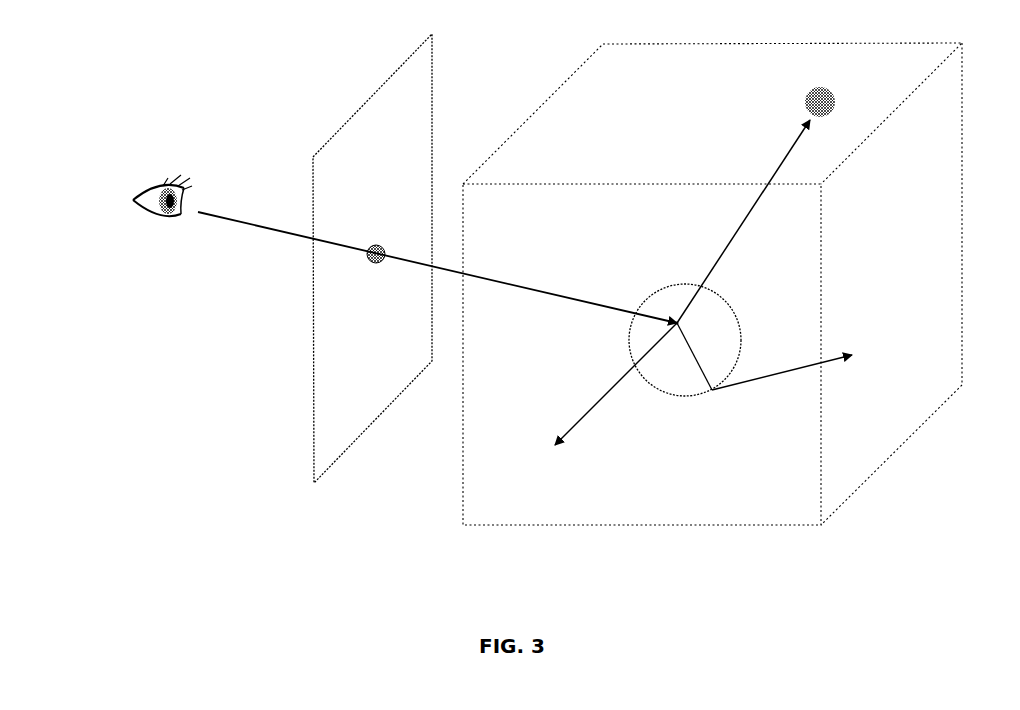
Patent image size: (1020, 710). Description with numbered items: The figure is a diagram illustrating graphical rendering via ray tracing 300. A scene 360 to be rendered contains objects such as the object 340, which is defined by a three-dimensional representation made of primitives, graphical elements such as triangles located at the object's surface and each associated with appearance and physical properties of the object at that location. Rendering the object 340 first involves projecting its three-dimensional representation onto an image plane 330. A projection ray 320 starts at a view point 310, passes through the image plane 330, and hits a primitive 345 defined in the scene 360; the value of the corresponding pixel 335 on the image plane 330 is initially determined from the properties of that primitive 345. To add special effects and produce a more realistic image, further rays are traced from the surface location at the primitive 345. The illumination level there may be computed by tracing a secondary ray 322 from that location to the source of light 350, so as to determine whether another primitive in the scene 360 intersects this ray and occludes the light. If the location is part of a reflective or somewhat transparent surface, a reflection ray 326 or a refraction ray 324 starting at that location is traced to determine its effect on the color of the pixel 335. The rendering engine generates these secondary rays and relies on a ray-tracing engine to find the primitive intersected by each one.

The graphical rendering via ray tracing 300 is at (511, 670).
The view point 310 is at (117, 195).
The projection ray 320 is at (437, 267).
The secondary ray 322 is at (743, 221).
The refraction ray 324 is at (782, 367).
The reflection ray 326 is at (610, 384).
The image plane 330 is at (343, 258).
The pixel 335 is at (389, 266).
The object 340 is at (685, 368).
The primitive 345 is at (695, 352).
The source of light 350 is at (851, 79).
The scene 360 is at (712, 300).